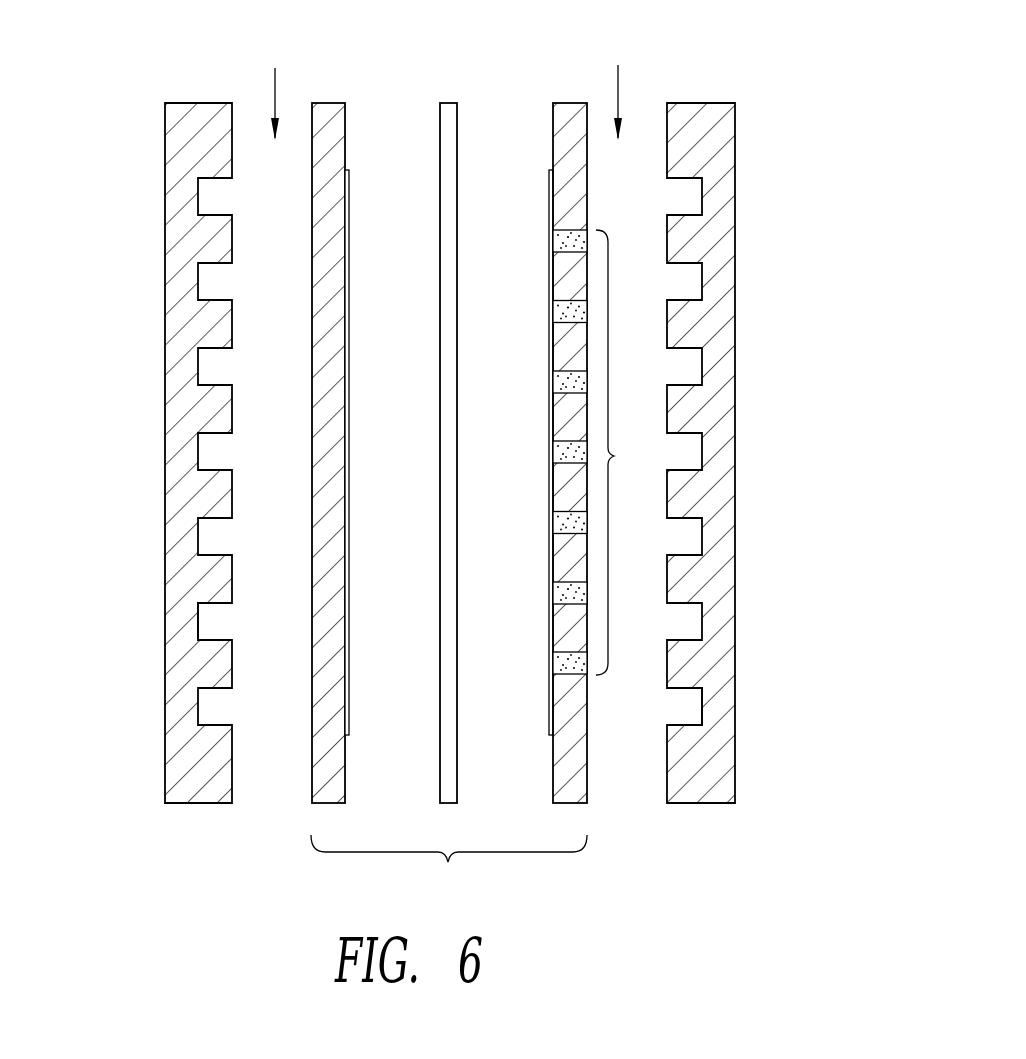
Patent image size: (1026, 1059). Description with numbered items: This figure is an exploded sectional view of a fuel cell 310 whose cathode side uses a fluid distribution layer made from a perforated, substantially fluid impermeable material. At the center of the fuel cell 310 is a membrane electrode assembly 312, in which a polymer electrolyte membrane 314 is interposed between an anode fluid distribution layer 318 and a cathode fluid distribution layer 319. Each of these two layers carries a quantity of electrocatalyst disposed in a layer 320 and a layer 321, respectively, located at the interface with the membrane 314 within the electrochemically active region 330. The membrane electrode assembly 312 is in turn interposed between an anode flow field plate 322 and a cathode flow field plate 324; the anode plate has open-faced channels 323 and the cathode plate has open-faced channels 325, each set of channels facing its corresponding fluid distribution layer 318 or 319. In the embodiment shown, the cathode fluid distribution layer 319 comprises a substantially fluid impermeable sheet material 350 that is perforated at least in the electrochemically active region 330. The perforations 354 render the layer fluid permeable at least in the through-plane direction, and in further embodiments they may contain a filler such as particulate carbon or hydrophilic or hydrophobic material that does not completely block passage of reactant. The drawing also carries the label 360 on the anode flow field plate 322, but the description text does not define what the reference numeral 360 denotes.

The fuel cell 310 is at (710, 92).
The membrane electrode assembly 312 is at (448, 862).
The polymer electrolyte membrane 314 is at (447, 806).
The anode fluid distribution layer 318 is at (329, 75).
The cathode fluid distribution layer 319 is at (568, 75).
The electrocatalyst layer 320 is at (349, 240).
The electrocatalyst layer 321 is at (551, 200).
The anode flow field plate 322 is at (177, 703).
The open-faced channels 323 is at (213, 622).
The cathode flow field plate 324 is at (720, 778).
The open-faced channels 325 is at (687, 707).
The electrochemically active region 330 is at (614, 456).
The substantially fluid impermeable sheet material 350 is at (587, 805).
The perforations 354 is at (553, 383).
The plate body 360 is at (180, 785).